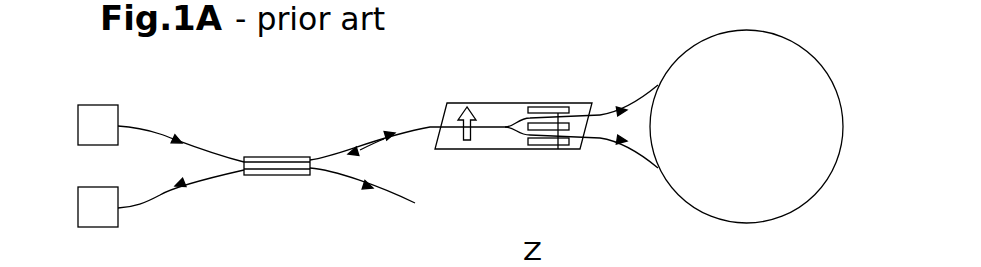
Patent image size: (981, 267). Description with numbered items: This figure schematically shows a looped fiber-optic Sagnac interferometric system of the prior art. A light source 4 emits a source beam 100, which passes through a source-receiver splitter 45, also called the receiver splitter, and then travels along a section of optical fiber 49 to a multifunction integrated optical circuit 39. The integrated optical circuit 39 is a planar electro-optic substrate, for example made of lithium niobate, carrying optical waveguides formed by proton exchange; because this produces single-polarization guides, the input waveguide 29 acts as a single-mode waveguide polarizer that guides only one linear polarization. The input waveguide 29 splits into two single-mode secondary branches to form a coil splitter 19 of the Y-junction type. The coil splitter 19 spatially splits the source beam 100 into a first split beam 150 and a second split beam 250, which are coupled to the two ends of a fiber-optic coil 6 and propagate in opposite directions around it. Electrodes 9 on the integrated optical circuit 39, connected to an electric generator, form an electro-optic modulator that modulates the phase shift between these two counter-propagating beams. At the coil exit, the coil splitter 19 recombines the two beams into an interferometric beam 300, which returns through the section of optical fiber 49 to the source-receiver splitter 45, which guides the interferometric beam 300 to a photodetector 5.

The light source 4 is at (78, 126).
The photodetector 5 is at (78, 210).
The source beam 100 is at (176, 135).
The interferometric beam 300 is at (186, 192).
The source-receiver splitter 45 is at (280, 176).
The section of optical fiber 49 is at (368, 146).
The multifunction integrated optical circuit 39 is at (510, 103).
The input waveguide 29 is at (477, 103).
The coil splitter 19 is at (504, 130).
The electrodes 9 is at (561, 146).
The first split beam 150 is at (620, 105).
The second split beam 250 is at (622, 148).
The fiber-optic coil 6 is at (838, 102).